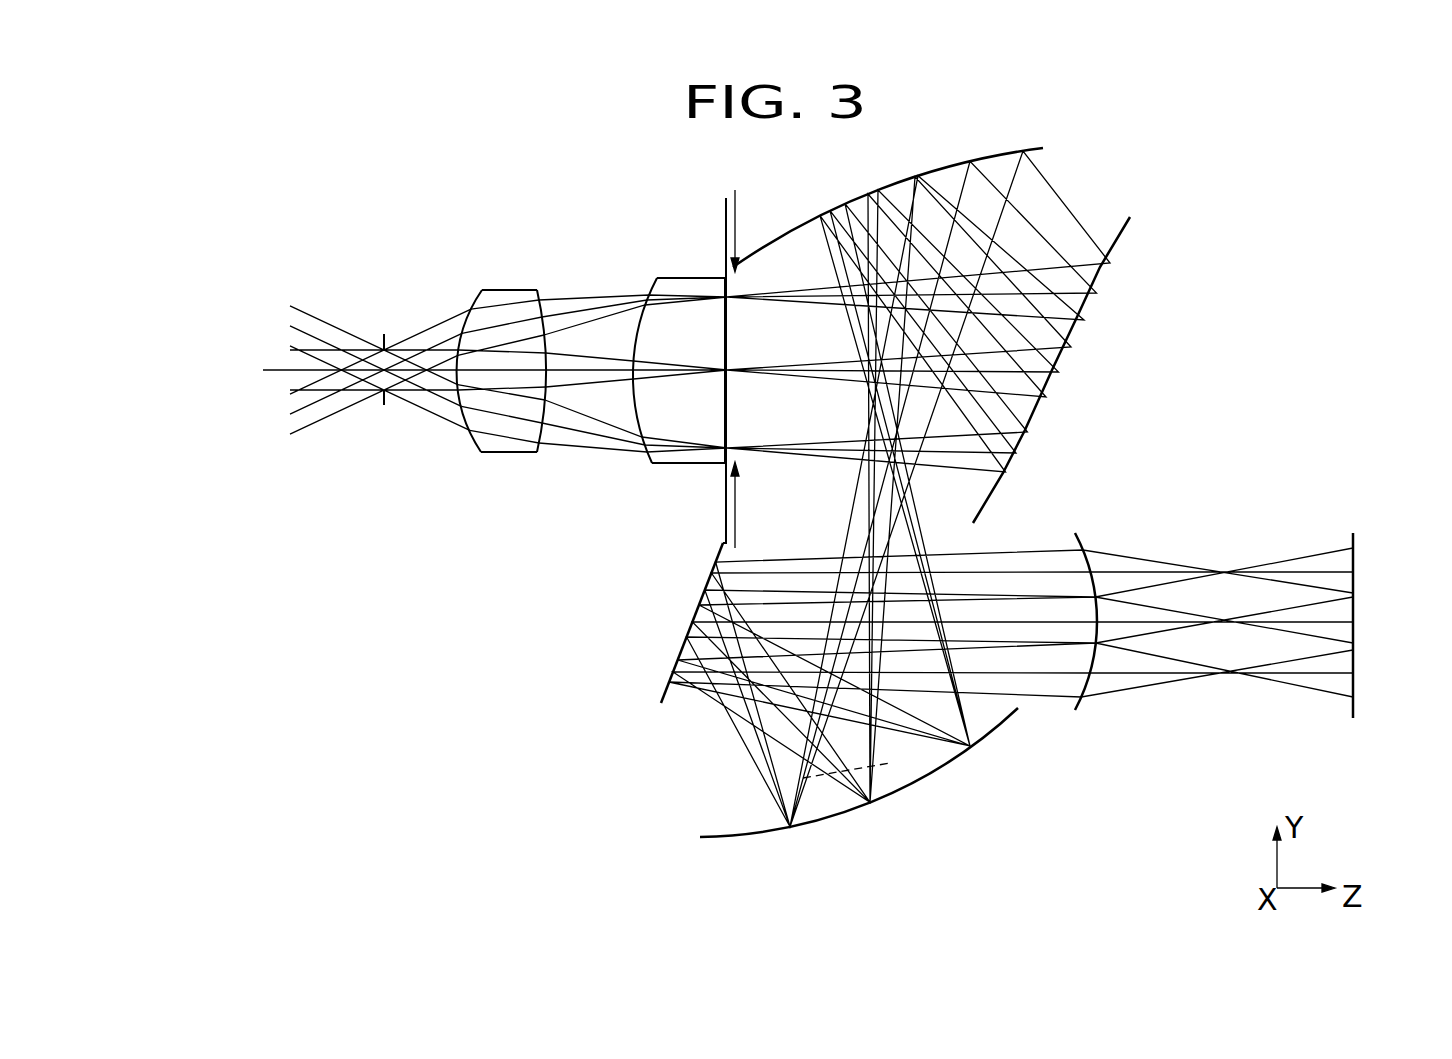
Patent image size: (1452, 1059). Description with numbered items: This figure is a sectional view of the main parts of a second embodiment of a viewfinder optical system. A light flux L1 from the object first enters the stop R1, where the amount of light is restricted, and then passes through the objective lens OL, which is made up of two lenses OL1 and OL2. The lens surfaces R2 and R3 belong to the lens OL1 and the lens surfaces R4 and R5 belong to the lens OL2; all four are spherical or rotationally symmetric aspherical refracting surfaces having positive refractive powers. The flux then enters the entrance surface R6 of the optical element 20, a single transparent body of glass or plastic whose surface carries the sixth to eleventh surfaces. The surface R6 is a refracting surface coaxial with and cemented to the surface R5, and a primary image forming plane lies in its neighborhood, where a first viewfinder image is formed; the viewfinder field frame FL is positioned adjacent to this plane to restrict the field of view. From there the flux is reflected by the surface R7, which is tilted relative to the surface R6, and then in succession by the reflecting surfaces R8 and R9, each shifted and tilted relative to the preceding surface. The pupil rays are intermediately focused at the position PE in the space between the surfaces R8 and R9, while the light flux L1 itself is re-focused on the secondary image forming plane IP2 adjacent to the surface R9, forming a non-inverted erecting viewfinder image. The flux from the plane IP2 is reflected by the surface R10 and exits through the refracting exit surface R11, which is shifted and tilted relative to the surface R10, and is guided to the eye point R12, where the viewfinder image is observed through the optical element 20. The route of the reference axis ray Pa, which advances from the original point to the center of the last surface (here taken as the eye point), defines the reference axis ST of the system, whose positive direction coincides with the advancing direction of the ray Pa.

The optical element 20 is at (1108, 176).
The stop R1 is at (385, 342).
The lens surface R2 is at (470, 443).
The lens surface R3 is at (537, 452).
The lens surface R4 is at (639, 425).
The lens surface R5 is at (725, 522).
The sixth surface R6 is at (721, 330).
The seventh surface R7 is at (1128, 230).
The eighth surface R8 is at (1025, 151).
The ninth surface R9 is at (719, 838).
The tenth surface R10 is at (660, 700).
The eleventh surface R11 is at (1078, 710).
The eye point R12 is at (1373, 500).
The objective lens OL is at (723, 497).
The lens OL1 is at (508, 300).
The lens OL2 is at (668, 287).
The viewfinder field frame FL is at (736, 228).
The pupil ray intermediate focus position PE is at (877, 397).
The secondary image forming plane IP2 is at (876, 767).
The reference axis ray Pa is at (1330, 622).
The light flux L1 is at (263, 292).
The reference axis ST is at (276, 370).